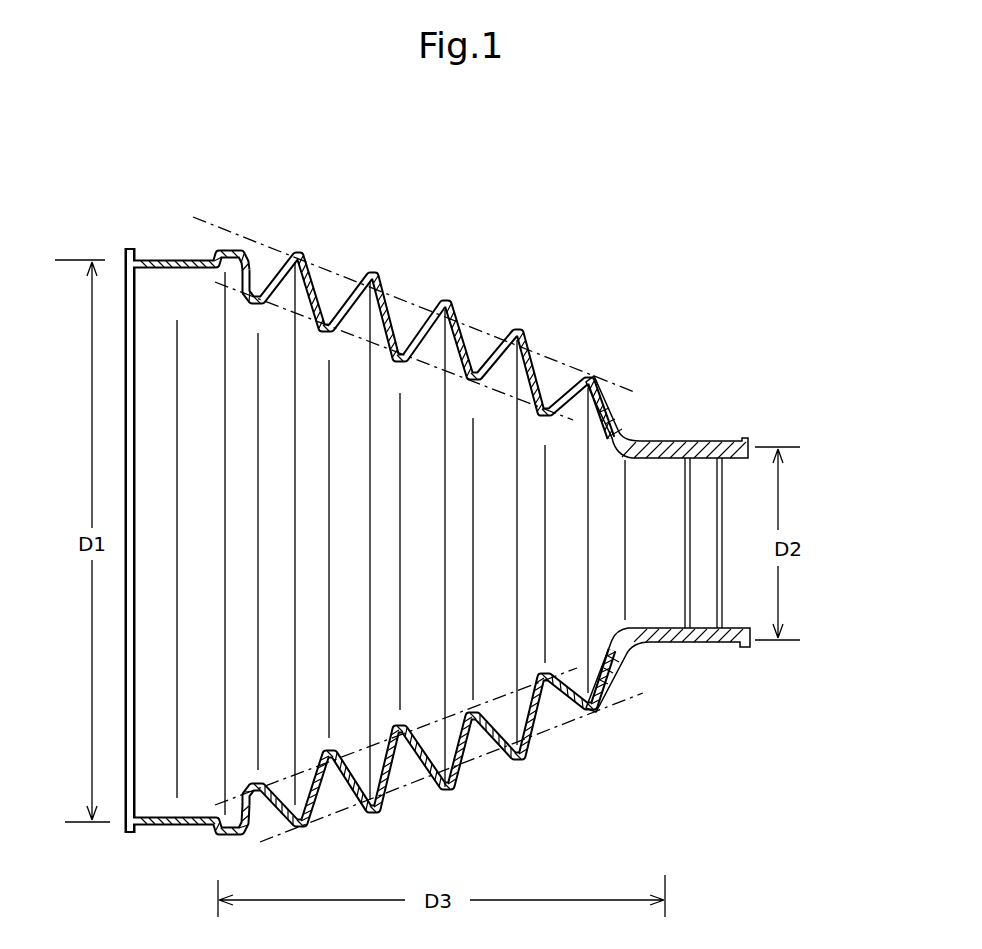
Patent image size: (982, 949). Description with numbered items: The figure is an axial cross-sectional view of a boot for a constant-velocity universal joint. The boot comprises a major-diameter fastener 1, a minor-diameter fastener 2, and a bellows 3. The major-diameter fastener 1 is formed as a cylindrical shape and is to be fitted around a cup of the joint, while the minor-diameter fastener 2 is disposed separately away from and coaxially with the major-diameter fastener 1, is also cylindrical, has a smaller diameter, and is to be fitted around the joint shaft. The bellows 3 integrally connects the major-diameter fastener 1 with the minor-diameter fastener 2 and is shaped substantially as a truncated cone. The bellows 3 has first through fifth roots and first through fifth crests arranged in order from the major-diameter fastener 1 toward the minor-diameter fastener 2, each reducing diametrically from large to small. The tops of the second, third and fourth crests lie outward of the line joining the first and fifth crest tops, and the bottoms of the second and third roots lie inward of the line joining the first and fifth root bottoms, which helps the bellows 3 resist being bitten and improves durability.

The major-diameter fastener 1 is at (165, 262).
The minor-diameter fastener 2 is at (729, 443).
The bellows 3 is at (482, 263).